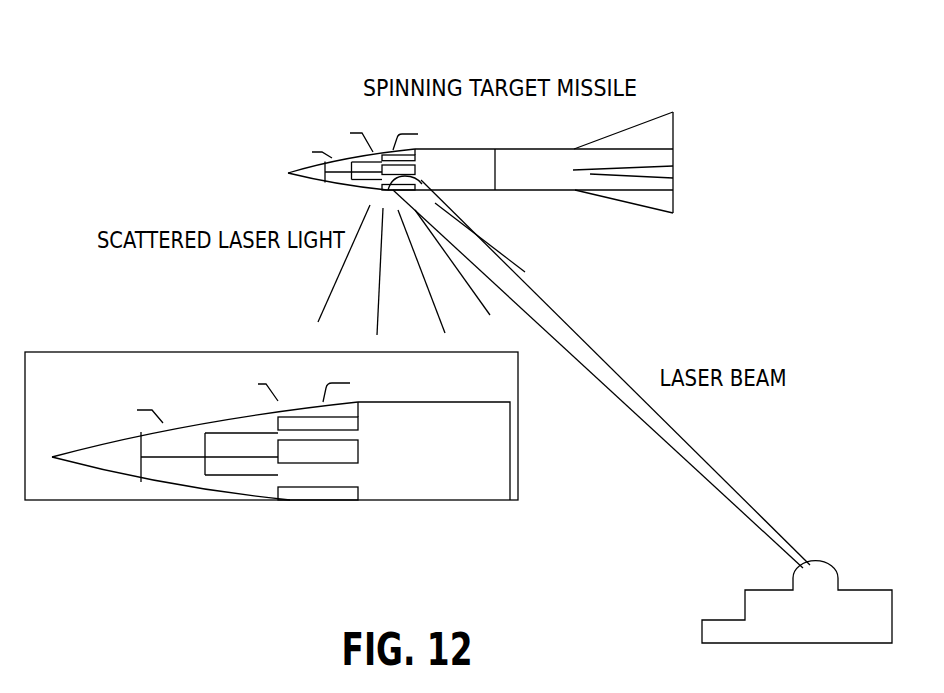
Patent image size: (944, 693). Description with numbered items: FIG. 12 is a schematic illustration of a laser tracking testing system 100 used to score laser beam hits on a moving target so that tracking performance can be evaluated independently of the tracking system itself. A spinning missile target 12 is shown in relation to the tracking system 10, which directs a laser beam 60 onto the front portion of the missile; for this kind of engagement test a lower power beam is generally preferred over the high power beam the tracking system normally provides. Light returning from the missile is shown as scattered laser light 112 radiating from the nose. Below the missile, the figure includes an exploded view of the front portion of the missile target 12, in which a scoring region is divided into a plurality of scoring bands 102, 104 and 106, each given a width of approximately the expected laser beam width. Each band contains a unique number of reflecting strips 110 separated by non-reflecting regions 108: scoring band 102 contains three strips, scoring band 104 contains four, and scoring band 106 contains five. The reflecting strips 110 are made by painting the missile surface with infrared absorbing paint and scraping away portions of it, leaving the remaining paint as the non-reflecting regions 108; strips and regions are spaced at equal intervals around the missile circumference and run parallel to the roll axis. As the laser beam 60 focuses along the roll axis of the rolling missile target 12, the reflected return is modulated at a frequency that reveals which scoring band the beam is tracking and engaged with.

The laser tracking testing system 100 is at (262, 83).
The missile target 12 is at (662, 157).
The scattered laser light 112 is at (333, 285).
The laser beam 60 is at (615, 376).
The tracking system 10 is at (873, 590).
The scoring band 102 is at (203, 501).
The scoring band 104 is at (206, 515).
The scoring band 106 is at (278, 524).
The non-reflecting regions 108 is at (360, 453).
The reflecting strips 110 is at (345, 428).